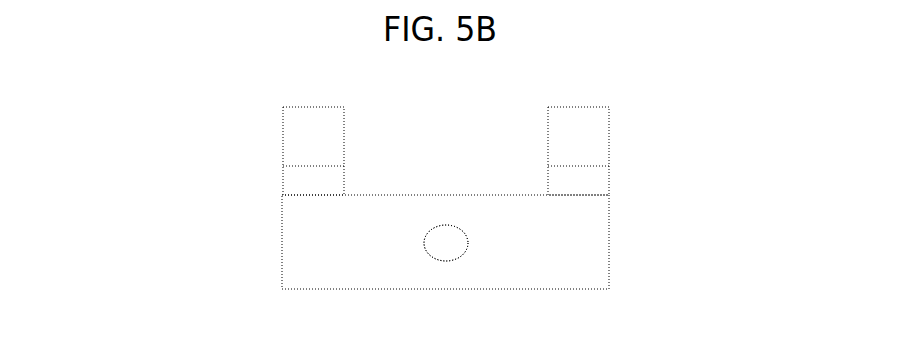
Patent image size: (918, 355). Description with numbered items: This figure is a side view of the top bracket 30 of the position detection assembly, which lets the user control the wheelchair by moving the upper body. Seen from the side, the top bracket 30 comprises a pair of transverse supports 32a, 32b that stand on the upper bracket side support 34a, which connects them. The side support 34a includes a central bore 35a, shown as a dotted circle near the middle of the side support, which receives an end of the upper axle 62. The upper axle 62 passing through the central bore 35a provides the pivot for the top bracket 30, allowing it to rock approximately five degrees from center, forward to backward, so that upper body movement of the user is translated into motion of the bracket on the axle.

The top bracket 30 is at (88, 182).
The transverse support 32a is at (343, 173).
The transverse support 32b is at (605, 171).
The upper bracket side support 34a is at (282, 251).
The central bore 35a is at (467, 243).
The upper axle 62 is at (447, 243).